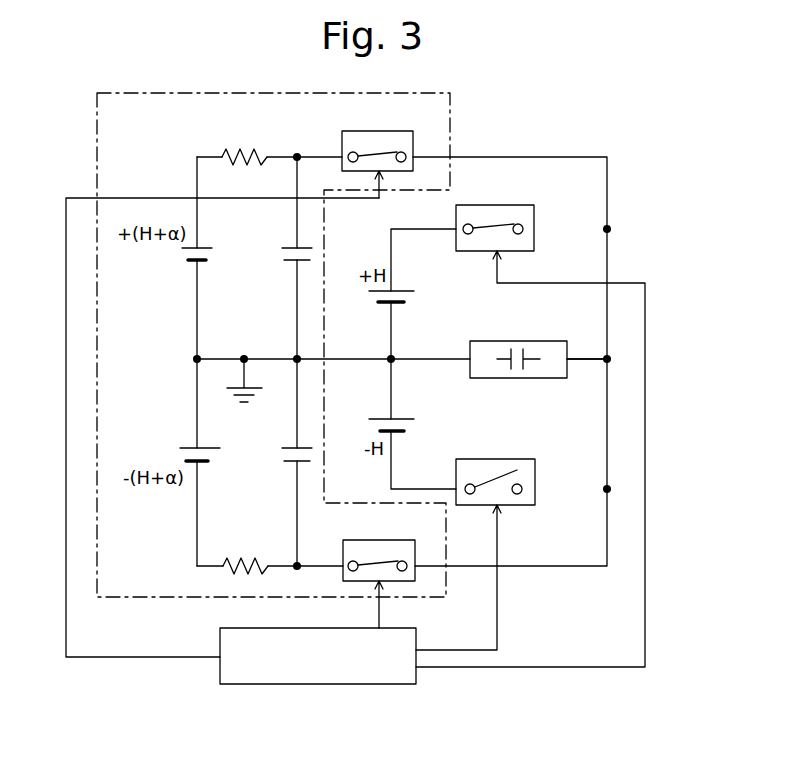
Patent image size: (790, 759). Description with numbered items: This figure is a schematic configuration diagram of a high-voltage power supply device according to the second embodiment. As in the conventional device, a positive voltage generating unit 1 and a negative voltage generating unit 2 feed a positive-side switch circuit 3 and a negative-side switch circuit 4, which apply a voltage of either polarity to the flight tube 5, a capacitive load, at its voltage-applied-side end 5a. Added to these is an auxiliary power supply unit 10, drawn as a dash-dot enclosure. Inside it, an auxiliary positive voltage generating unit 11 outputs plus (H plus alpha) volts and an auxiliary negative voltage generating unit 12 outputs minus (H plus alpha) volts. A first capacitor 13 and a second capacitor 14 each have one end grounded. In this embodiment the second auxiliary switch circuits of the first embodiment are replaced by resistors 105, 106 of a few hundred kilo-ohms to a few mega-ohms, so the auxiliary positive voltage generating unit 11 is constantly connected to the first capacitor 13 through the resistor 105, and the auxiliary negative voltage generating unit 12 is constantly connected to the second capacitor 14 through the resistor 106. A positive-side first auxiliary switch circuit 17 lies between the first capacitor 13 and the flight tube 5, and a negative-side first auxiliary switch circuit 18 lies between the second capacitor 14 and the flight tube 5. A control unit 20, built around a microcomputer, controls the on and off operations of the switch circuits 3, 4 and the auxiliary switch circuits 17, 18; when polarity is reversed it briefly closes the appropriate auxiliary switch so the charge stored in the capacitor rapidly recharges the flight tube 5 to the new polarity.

The positive voltage generating unit 1 is at (378, 300).
The negative voltage generating unit 2 is at (378, 420).
The positive-side switch circuit 3 is at (498, 205).
The negative-side switch circuit 4 is at (508, 458).
The flight tube 5 is at (530, 340).
The voltage-applied-side end 5a is at (566, 352).
The auxiliary power supply unit 10 is at (452, 112).
The auxiliary positive voltage generating unit 11 is at (183, 254).
The auxiliary negative voltage generating unit 12 is at (183, 449).
The first capacitor 13 is at (292, 247).
The second capacitor 14 is at (292, 449).
The positive-side first auxiliary switch circuit 17 is at (385, 131).
The negative-side first auxiliary switch circuit 18 is at (385, 540).
The control unit 20 is at (357, 686).
The resistor 105 is at (255, 150).
The resistor 106 is at (257, 558).